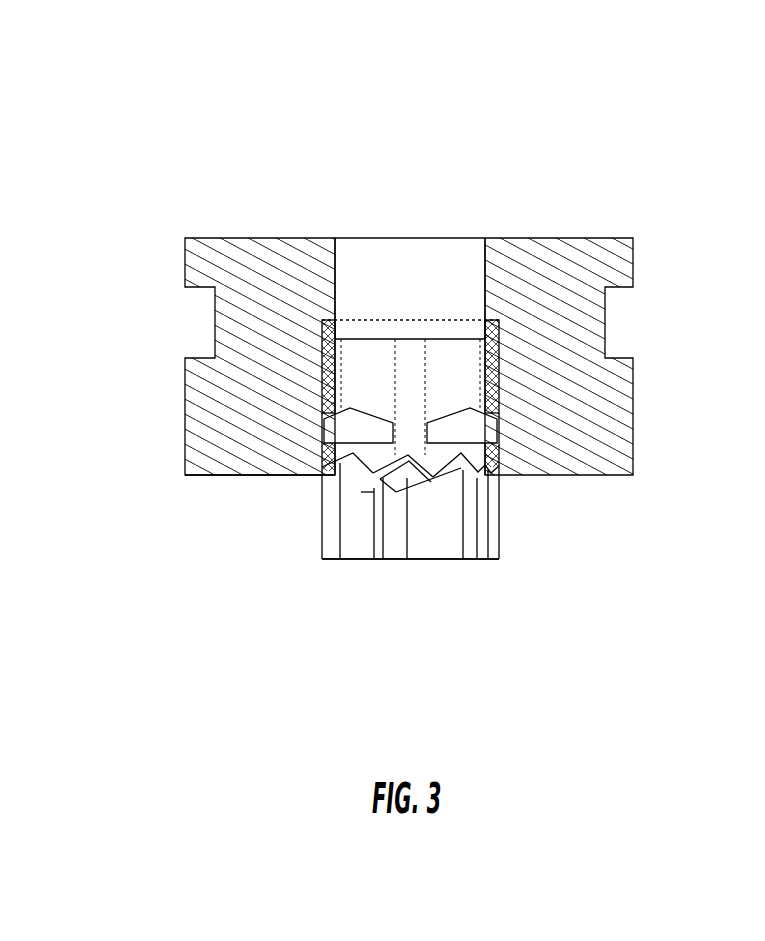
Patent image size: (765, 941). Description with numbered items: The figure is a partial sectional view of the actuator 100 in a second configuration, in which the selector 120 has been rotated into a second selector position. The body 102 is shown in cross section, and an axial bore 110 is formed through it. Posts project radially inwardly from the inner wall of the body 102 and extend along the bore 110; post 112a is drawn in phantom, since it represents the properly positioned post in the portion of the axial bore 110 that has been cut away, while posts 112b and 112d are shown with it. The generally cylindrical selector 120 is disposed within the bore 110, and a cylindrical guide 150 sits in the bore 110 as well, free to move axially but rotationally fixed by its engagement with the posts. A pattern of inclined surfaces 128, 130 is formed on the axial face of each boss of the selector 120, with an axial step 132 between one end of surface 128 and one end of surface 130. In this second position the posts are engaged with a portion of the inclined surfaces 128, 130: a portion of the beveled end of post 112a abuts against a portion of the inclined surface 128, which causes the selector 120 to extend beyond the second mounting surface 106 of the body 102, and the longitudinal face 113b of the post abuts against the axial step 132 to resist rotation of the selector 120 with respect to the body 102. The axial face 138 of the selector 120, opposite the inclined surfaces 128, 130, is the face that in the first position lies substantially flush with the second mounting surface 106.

The actuator 100 is at (597, 99).
The body 102 is at (123, 254).
The second mounting surface 106 is at (195, 475).
The axial bore 110 is at (350, 267).
The longitudinal face 113b is at (387, 252).
The cylindrical guide 150 is at (352, 398).
The post 112a is at (427, 329).
The post 112b is at (320, 413).
The post 112d is at (498, 452).
The selector 120 is at (293, 559).
The inclined surface 128 is at (430, 482).
The inclined surface 130 is at (387, 468).
The axial step 132 is at (382, 515).
The axial face 138 is at (427, 560).